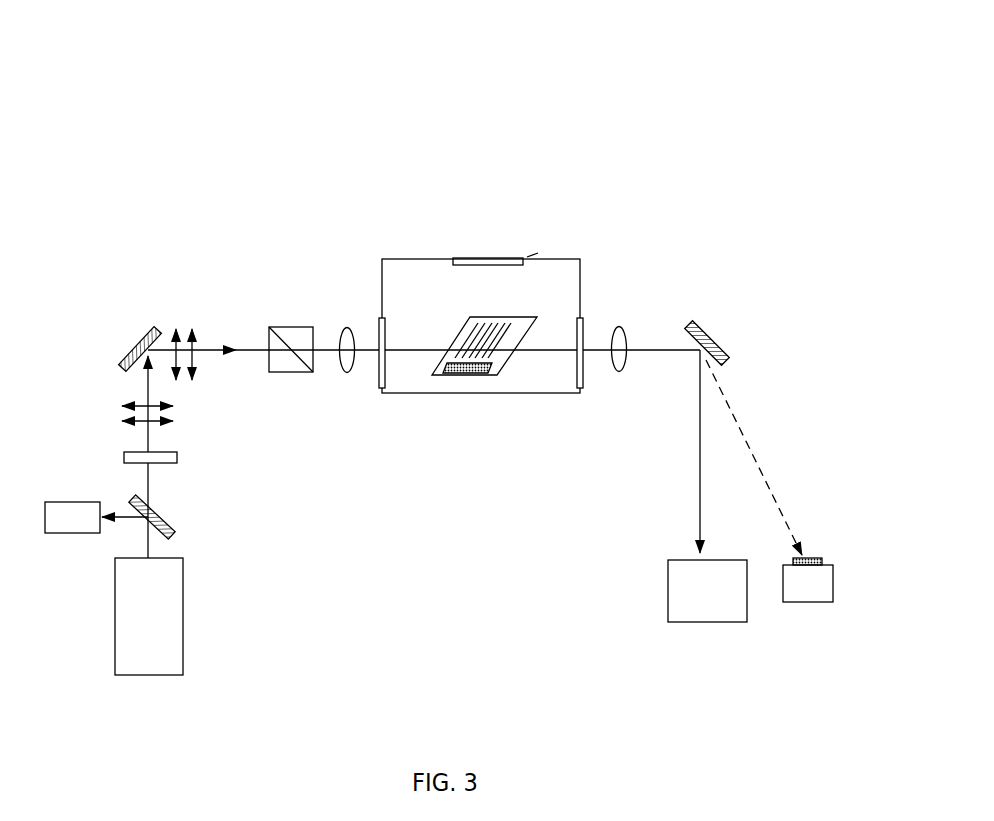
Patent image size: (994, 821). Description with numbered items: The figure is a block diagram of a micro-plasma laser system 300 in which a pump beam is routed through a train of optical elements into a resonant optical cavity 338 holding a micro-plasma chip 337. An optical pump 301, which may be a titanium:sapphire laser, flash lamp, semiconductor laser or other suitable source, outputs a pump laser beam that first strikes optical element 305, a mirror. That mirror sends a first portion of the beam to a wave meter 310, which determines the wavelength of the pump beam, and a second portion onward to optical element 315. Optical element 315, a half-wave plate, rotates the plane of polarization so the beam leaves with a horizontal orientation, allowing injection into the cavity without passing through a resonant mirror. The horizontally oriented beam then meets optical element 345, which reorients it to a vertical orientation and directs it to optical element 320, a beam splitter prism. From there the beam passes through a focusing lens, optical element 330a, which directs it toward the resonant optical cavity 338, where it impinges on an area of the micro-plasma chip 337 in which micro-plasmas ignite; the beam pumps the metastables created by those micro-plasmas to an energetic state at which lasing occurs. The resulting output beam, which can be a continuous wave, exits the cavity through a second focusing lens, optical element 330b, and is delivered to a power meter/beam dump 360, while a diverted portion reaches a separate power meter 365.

The micro-plasma laser system 300 is at (466, 138).
The optical pump 301 is at (187, 630).
The optical element 305 is at (174, 526).
The wave meter 310 is at (69, 536).
The optical element 315 is at (120, 456).
The optical element 320 is at (274, 376).
The optical element 330a is at (346, 378).
The optical element 330b is at (618, 377).
The micro-plasma chip 337 is at (522, 348).
The resonant optical cavity 338 is at (494, 309).
The optical element 345 is at (130, 346).
The power meter/beam dump 360 is at (661, 620).
The power meter 365 is at (808, 604).